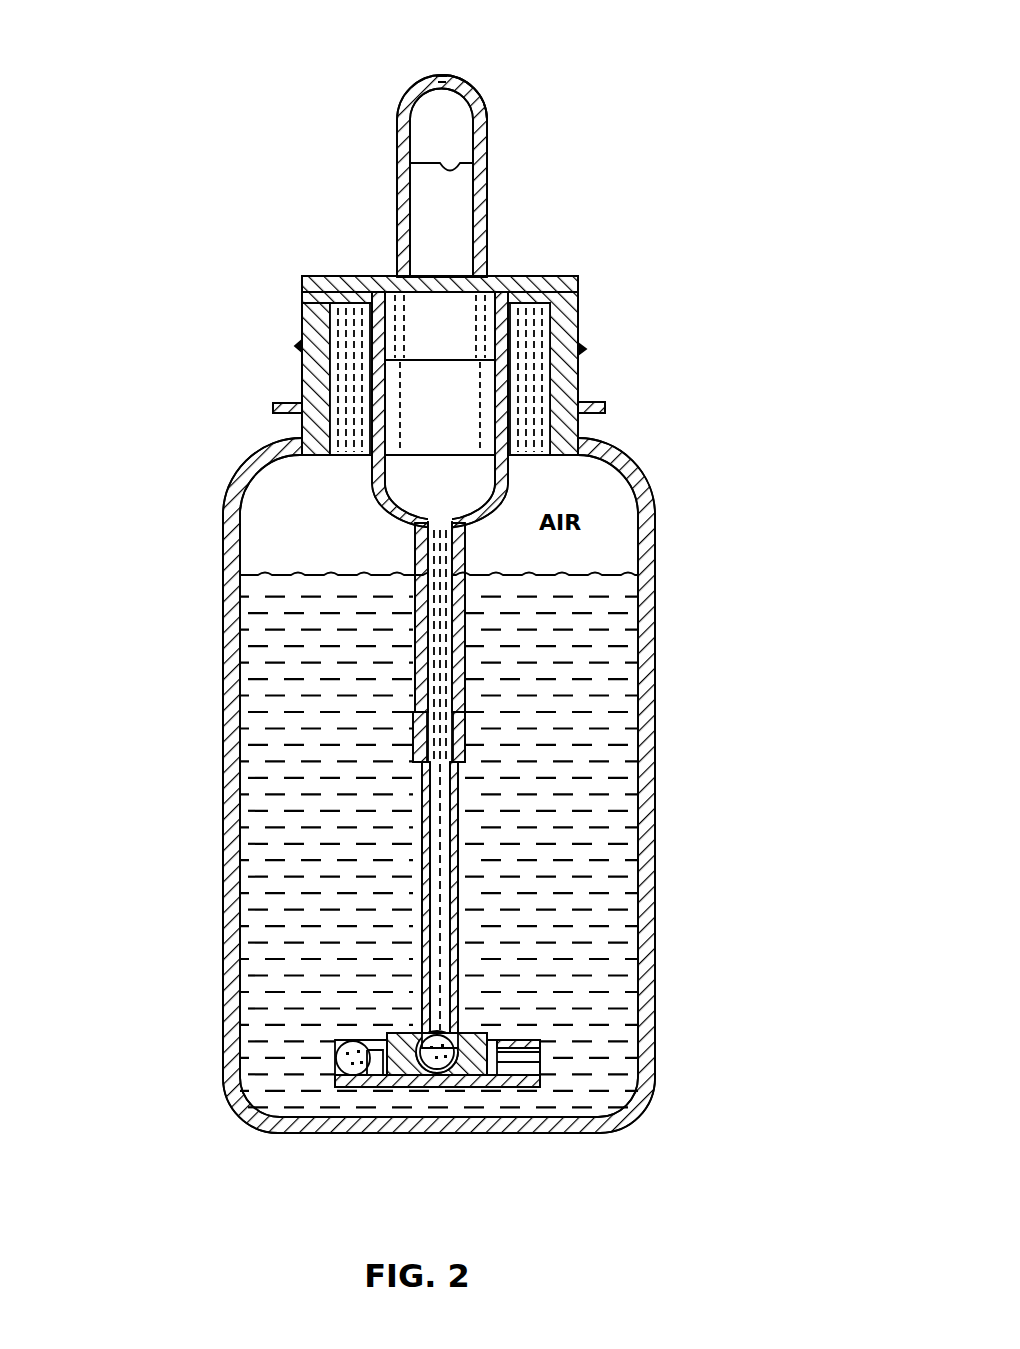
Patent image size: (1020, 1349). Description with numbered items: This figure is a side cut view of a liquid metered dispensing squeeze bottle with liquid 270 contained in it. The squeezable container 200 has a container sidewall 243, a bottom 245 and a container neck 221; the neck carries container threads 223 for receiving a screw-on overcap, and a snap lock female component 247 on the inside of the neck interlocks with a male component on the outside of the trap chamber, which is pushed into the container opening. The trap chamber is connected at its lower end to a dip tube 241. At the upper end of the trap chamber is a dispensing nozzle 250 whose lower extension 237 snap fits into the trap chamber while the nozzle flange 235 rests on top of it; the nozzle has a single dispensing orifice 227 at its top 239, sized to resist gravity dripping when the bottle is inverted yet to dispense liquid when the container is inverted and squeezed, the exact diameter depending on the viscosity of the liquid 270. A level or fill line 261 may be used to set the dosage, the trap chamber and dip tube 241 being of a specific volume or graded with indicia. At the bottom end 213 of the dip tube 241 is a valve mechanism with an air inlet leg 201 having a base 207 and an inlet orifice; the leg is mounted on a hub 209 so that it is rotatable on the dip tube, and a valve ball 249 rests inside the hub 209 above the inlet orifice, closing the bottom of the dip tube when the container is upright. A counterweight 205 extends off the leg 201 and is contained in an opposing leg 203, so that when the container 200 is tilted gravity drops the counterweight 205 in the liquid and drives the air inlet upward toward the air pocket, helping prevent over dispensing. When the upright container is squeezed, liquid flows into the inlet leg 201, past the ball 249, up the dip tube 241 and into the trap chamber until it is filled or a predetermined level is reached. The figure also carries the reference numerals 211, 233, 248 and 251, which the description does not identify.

The squeezable container 200 is at (668, 749).
The air inlet leg 201 is at (527, 1040).
The opposing leg 203 is at (362, 1042).
The counterweight 205 is at (343, 1087).
The base 207 is at (540, 1052).
The hub 209 is at (478, 1045).
The passage 211 is at (540, 1070).
The bottom end 213 is at (400, 1035).
The container neck 221 is at (586, 392).
The container threads 223 is at (585, 349).
The dispensing orifice 227 is at (441, 75).
The bulb 233 is at (397, 192).
The nozzle flange 235 is at (302, 276).
The lower extension 237 is at (393, 328).
The top 239 is at (470, 80).
The dip tube 241 is at (465, 828).
The container sidewall 243 is at (570, 576).
The bottom 245 is at (383, 1133).
The snap lock female component 247 is at (300, 382).
The bottle side wall 248 is at (223, 740).
The valve ball 249 is at (438, 1077).
The dispensing nozzle 250 is at (580, 236).
The tube connection 251 is at (425, 1033).
The level line 261 is at (458, 170).
The liquid 270 is at (439, 840).